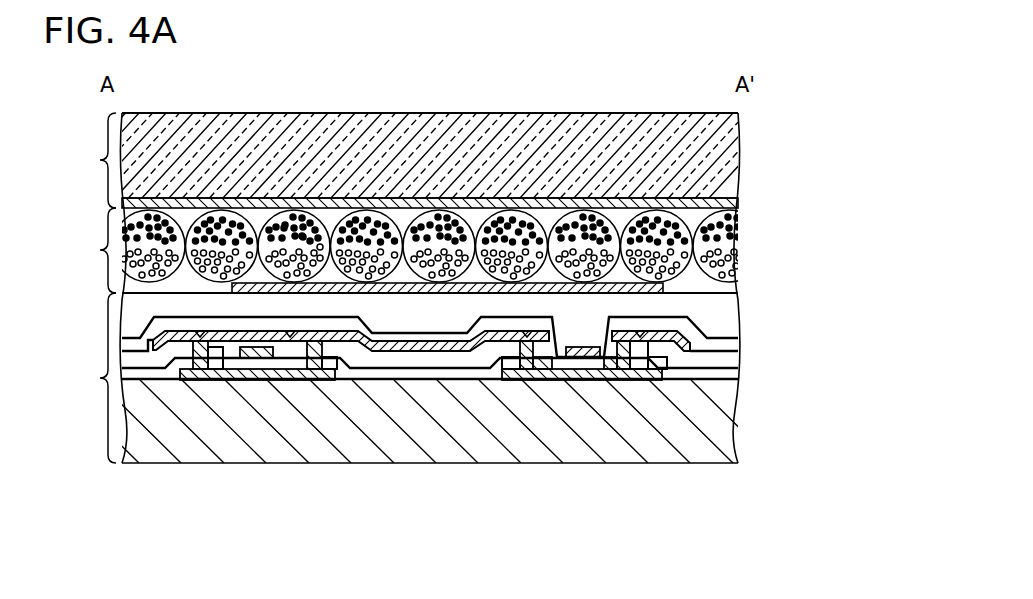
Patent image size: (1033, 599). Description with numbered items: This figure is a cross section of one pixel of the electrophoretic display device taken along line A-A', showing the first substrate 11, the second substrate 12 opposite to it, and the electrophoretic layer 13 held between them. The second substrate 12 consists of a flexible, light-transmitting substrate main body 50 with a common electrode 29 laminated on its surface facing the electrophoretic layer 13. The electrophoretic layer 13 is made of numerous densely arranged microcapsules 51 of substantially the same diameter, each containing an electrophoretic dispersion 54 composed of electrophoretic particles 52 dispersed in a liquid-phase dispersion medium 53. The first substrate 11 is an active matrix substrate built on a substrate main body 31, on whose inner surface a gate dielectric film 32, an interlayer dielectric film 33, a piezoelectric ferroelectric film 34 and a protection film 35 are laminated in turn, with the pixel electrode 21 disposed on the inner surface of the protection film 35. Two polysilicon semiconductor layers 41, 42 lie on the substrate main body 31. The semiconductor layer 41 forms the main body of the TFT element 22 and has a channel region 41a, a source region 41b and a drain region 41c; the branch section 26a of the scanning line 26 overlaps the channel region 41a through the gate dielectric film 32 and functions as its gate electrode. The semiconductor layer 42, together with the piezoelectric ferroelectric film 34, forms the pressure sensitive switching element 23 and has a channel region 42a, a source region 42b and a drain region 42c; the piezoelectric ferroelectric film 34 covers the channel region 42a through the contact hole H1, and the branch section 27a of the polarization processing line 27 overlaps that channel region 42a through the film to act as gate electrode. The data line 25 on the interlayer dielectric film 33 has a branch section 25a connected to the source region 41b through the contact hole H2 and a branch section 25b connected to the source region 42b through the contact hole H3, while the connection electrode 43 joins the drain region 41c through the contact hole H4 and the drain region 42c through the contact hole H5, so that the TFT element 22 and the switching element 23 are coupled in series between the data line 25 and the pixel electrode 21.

The first substrate 11 is at (428, 324).
The second substrate 12 is at (418, 165).
The electrophoretic layer 13 is at (414, 183).
The pixel electrode 21 is at (436, 283).
The TFT element 22 is at (337, 378).
The switching element 23 is at (663, 380).
The data line 25 is at (439, 203).
The branch section 25a is at (197, 273).
The branch section 25b is at (633, 340).
The scanning line 26 is at (421, 323).
The branch section 26a is at (335, 335).
The polarization processing line 27 is at (593, 211).
The branch section 27a is at (587, 347).
The common electrode 29 is at (740, 206).
The substrate main body 31 is at (724, 423).
The gate dielectric film 32 is at (731, 377).
The interlayer dielectric film 33 is at (732, 360).
The piezoelectric ferroelectric film 34 is at (462, 323).
The protection film 35 is at (732, 312).
The semiconductor layer 41 is at (276, 461).
The channel region 41a is at (257, 359).
The source region 41b is at (218, 371).
The drain region 41c is at (322, 359).
The semiconductor layer 42 is at (600, 461).
The channel region 42a is at (585, 370).
The source region 42b is at (637, 369).
The drain region 42c is at (548, 368).
The connection electrode 43 is at (447, 350).
The substrate main body 50 is at (740, 143).
The microcapsule 51 is at (263, 214).
The electrophoretic particles 52 is at (303, 262).
The liquid-phase dispersion medium 53 is at (321, 247).
The electrophoretic dispersion 54 is at (322, 144).
The contact hole H1 is at (555, 343).
The contact hole H2 is at (192, 343).
The contact hole H3 is at (667, 369).
The contact hole H4 is at (342, 370).
The contact hole H5 is at (506, 372).